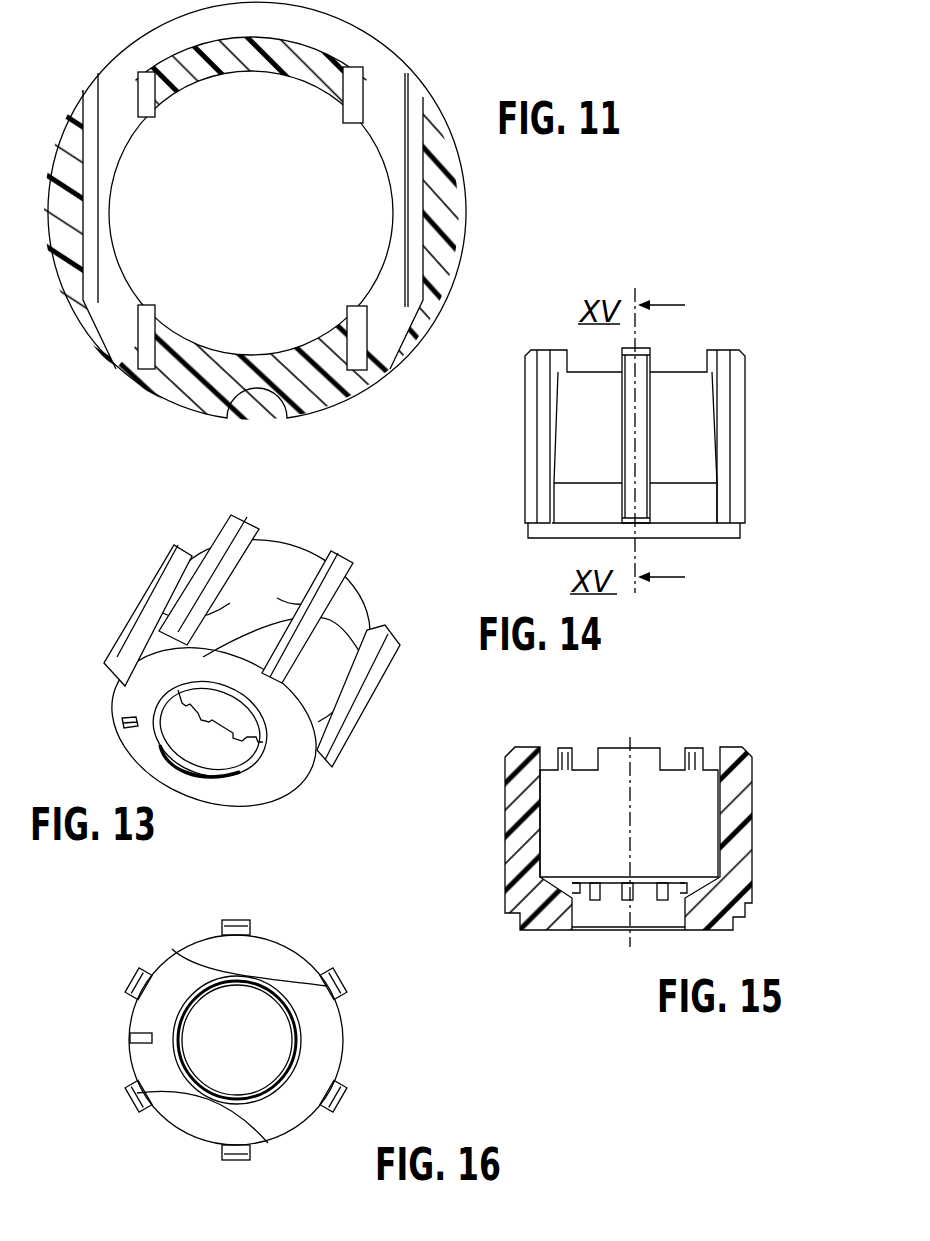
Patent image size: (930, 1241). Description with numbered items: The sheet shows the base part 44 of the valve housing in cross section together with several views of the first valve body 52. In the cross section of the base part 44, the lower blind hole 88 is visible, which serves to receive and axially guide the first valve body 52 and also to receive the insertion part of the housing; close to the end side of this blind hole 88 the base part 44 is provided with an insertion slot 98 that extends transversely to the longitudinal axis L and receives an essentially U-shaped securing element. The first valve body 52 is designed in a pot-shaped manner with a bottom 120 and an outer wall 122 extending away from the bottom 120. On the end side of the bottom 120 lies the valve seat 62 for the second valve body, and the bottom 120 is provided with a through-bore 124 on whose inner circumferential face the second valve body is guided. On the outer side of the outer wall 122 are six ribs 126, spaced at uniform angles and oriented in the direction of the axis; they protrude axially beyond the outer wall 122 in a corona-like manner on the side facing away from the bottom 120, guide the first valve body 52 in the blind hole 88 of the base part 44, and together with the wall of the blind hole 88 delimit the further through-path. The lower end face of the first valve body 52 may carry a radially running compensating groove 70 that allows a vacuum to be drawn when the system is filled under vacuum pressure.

In FIG. 11, the base part 44 is at (79, 338).
In FIG. 11, the lower blind hole 88 is at (187, 343).
In FIG. 11, the insertion slot 98 is at (123, 100).
In FIG. 14, the first valve body 52 is at (695, 342).
In FIG. 13, the first valve body 52 is at (116, 624).
In FIG. 15, the first valve body 52 is at (685, 737).
In FIG. 16, the first valve body 52 is at (300, 945).
In FIG. 14, the valve seat 62 is at (575, 538).
In FIG. 13, the valve seat 62 is at (173, 753).
In FIG. 15, the valve seat 62 is at (563, 935).
In FIG. 16, the valve seat 62 is at (302, 1014).
In FIG. 13, the compensating groove 70 is at (120, 721).
In FIG. 16, the compensating groove 70 is at (131, 1038).
In FIG. 14, the bottom 120 is at (700, 530).
In FIG. 13, the bottom 120 is at (253, 775).
In FIG. 15, the bottom 120 is at (702, 907).
In FIG. 16, the bottom 120 is at (203, 1110).
In FIG. 14, the outer wall 122 is at (597, 460).
In FIG. 13, the outer wall 122 is at (278, 572).
In FIG. 15, the outer wall 122 is at (737, 808).
In FIG. 16, the outer wall 122 is at (342, 1060).
In FIG. 13, the through-bore 124 is at (250, 747).
In FIG. 15, the through-bore 124 is at (613, 910).
In FIG. 16, the through-bore 124 is at (200, 998).
In FIG. 14, the ribs 126 is at (627, 390).
In FIG. 13, the ribs 126 is at (323, 597).
In FIG. 15, the ribs 126 is at (697, 750).
In FIG. 16, the ribs 126 is at (223, 930).
In FIG. 15, the longitudinal axis L is at (628, 938).